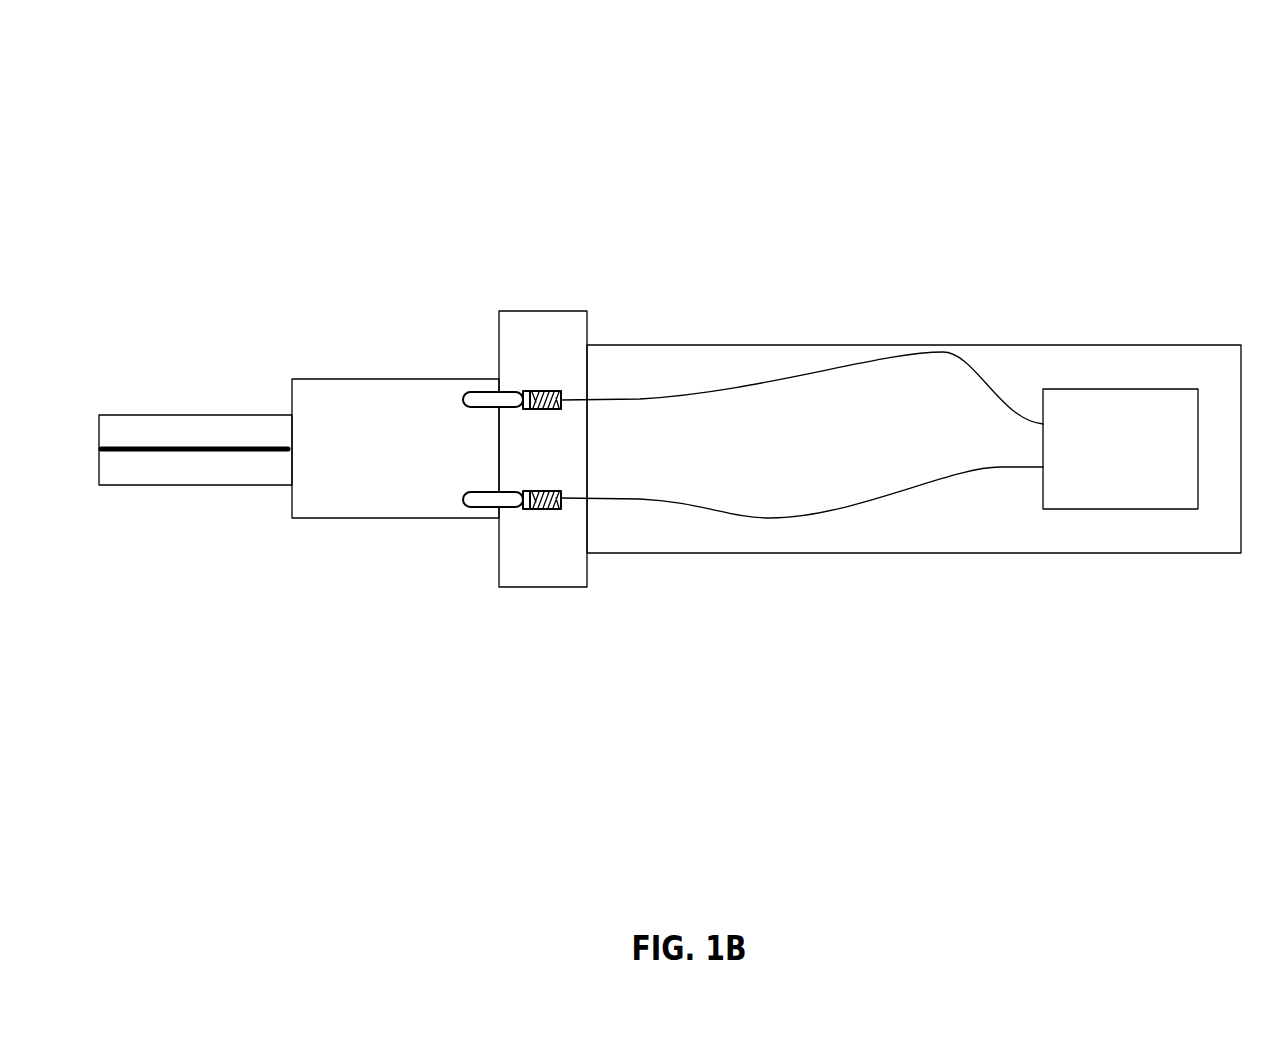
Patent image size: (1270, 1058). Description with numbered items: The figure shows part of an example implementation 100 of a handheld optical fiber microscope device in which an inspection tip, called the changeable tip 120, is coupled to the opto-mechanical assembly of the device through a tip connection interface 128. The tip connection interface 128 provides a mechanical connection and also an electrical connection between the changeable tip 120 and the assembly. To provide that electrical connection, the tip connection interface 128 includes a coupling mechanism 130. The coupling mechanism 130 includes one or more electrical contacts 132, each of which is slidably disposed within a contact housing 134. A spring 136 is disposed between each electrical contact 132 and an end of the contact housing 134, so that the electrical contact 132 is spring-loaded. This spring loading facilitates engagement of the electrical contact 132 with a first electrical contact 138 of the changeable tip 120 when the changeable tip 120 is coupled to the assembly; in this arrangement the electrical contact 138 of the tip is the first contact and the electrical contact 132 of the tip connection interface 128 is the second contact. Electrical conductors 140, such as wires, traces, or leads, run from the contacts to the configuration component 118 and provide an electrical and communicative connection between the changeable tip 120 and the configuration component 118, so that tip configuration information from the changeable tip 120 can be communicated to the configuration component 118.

The example implementation 100 is at (198, 64).
The configuration component 118 is at (1103, 487).
The changeable tip 120 is at (369, 518).
The tip connection interface 128 is at (515, 318).
The coupling mechanism 130 is at (487, 362).
The electrical contact 132 is at (532, 388).
The contact housing 134 is at (557, 389).
The spring 136 is at (552, 511).
The electrical contact 138 is at (478, 508).
The electrical conductors 140 is at (765, 388).